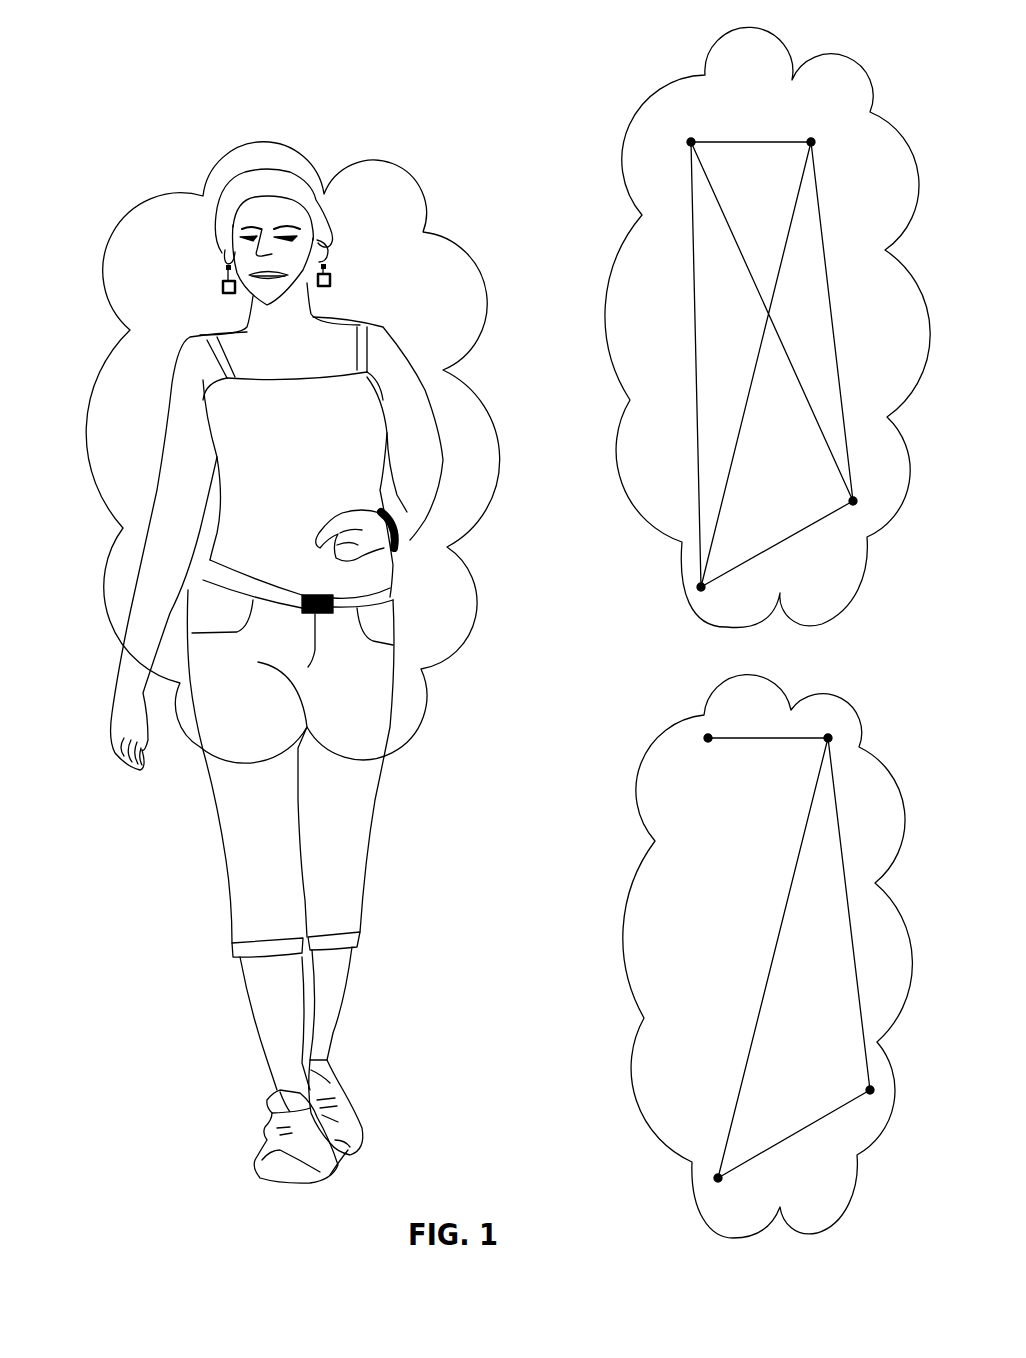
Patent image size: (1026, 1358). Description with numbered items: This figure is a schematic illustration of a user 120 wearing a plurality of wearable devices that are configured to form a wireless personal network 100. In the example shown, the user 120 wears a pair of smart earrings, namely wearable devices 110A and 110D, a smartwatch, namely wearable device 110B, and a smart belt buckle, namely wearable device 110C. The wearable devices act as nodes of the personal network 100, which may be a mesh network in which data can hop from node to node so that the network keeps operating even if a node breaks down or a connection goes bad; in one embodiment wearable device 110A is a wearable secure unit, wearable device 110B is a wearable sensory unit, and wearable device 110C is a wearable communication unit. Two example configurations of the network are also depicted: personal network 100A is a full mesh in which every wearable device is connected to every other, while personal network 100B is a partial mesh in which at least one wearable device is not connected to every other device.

The wireless personal network 100 is at (388, 168).
The personal network (full mesh configuration) 100A is at (878, 38).
The personal network (partial mesh configuration) 100B is at (866, 685).
The wearable device (smart earring) 110A is at (213, 277).
The wearable device (smartwatch) 110B is at (402, 527).
The wearable device (smart belt buckle) 110C is at (312, 594).
The wearable device (smart earring) 110D is at (336, 280).
The user 120 is at (190, 446).